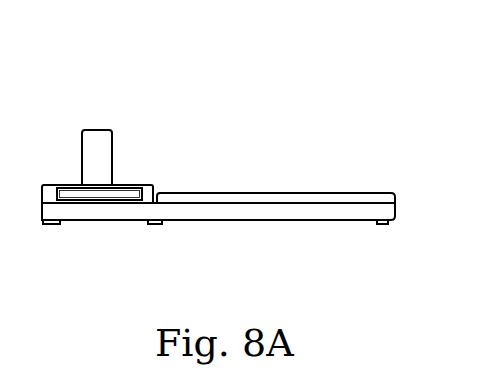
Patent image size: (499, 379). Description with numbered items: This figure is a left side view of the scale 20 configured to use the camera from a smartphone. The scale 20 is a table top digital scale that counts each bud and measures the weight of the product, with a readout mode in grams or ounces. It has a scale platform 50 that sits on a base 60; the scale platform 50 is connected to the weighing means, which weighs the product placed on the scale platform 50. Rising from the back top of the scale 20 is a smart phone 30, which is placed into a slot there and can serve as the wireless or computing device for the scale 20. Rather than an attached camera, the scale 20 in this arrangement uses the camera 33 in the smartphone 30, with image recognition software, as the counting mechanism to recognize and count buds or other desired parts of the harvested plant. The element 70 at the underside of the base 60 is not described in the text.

The scale 20 is at (402, 212).
The smart phone 30 is at (90, 145).
The camera 33 is at (111, 130).
The scale platform 50 is at (231, 192).
The base 60 is at (197, 219).
The foot pad 70 is at (387, 230).